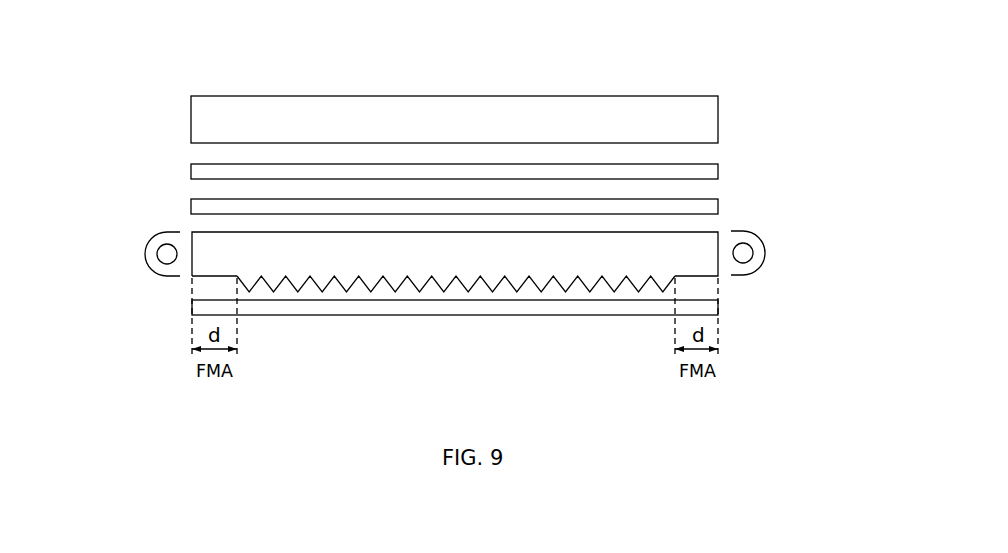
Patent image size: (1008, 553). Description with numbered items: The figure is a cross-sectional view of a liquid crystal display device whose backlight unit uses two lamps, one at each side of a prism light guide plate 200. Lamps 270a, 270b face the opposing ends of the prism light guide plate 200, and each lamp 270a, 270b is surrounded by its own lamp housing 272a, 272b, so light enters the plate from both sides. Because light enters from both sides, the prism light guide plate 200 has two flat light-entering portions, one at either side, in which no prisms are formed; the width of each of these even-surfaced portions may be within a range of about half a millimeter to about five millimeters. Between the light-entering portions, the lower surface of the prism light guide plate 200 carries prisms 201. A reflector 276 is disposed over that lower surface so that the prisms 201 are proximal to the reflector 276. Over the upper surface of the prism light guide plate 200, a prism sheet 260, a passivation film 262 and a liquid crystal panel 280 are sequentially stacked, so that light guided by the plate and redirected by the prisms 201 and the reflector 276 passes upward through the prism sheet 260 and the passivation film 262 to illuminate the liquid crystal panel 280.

The liquid crystal panel 280 is at (700, 105).
The passivation film 262 is at (713, 168).
The prism sheet 260 is at (713, 205).
The prism light guide plate 200 is at (705, 265).
The prisms 201 is at (612, 280).
The reflector 276 is at (405, 308).
The lamp housing 272a is at (152, 240).
The lamp 270a is at (162, 255).
The lamp housing 272b is at (767, 245).
The lamp 270b is at (747, 257).